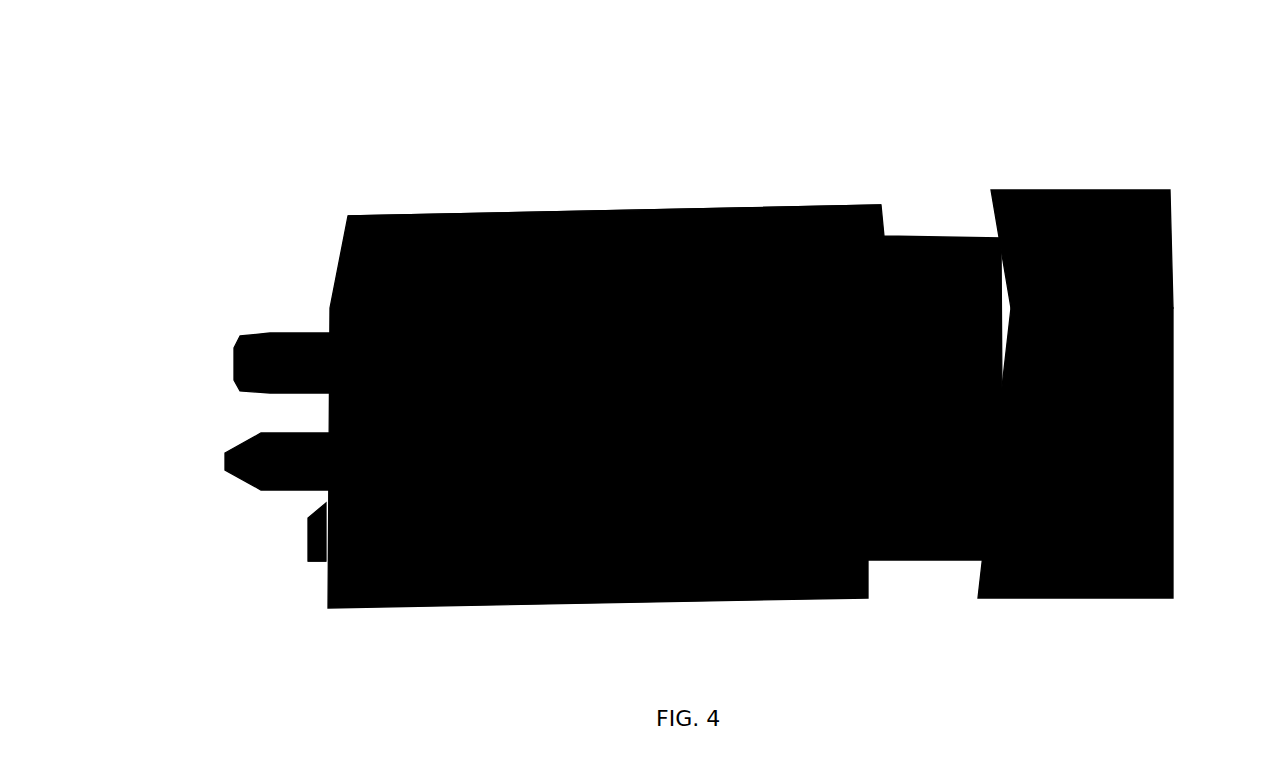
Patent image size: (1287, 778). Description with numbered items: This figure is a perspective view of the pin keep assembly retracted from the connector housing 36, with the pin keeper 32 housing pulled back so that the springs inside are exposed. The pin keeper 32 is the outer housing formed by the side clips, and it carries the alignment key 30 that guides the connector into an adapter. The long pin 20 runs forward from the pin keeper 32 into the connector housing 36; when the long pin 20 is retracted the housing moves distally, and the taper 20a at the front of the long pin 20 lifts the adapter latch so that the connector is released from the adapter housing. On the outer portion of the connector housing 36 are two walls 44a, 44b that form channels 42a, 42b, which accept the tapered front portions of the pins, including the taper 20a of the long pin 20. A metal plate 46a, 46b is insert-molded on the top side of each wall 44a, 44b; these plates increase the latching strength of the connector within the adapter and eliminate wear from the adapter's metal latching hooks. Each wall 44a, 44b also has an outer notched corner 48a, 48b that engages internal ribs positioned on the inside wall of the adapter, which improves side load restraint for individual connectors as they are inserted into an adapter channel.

The long pin 20 is at (930, 255).
The taper 20a is at (605, 255).
The alignment key 30 is at (1140, 210).
The pin keeper 32 is at (1085, 560).
The connector housing 36 is at (410, 527).
The channel 42a is at (360, 262).
The channel 42b is at (308, 554).
The wall 44a is at (372, 228).
The wall 44b is at (392, 276).
The metal plate 46a is at (543, 215).
The metal plate 46b is at (565, 277).
The outer notched corner 48a is at (363, 205).
The outer notched corner 48b is at (380, 316).